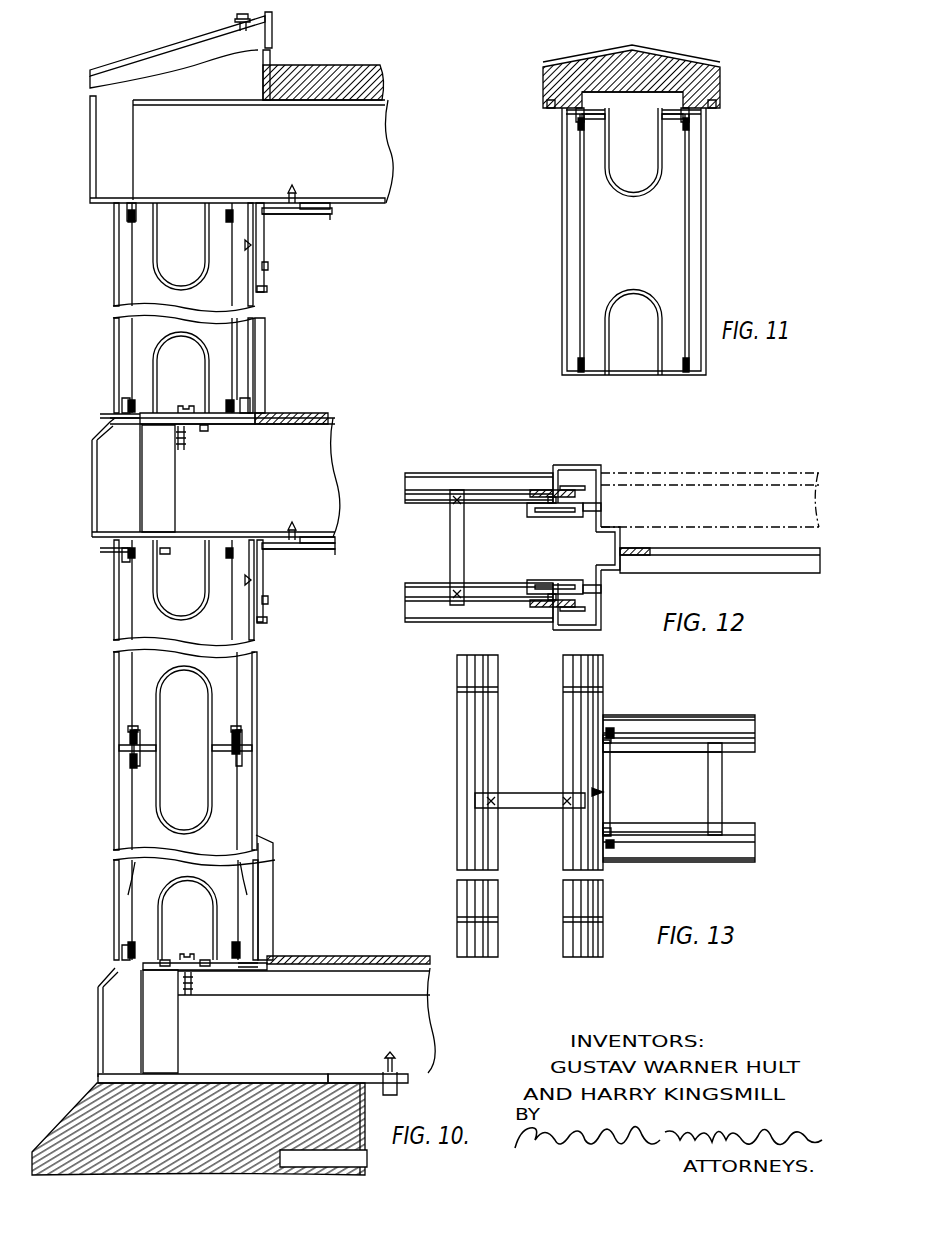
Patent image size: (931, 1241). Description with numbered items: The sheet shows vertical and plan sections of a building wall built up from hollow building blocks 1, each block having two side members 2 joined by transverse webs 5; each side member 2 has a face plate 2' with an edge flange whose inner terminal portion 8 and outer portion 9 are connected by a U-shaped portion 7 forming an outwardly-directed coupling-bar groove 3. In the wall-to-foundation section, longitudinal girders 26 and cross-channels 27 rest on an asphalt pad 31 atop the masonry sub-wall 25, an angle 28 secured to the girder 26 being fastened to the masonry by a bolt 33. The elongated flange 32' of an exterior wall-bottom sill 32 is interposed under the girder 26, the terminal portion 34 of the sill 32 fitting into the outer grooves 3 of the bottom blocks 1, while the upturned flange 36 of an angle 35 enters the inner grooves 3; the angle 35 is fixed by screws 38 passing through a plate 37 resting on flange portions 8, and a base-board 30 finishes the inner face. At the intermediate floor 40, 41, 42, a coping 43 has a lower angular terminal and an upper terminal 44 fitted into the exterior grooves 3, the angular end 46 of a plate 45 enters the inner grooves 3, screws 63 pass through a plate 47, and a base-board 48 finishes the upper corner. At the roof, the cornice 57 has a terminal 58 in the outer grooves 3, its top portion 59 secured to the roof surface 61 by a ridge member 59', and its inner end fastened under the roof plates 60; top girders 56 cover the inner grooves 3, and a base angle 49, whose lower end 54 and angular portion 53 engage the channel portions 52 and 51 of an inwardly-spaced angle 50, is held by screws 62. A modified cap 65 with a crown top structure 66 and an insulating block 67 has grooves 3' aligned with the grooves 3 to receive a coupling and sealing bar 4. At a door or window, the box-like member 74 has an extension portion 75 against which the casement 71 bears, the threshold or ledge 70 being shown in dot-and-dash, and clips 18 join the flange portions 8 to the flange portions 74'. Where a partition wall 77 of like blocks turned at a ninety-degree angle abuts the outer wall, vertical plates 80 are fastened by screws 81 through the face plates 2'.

In FIG. 10, the hollow building block 1 is at (114, 318).
In FIG. 11, the hollow building block 1 is at (560, 260).
In FIG. 12, the hollow building block 1 is at (460, 473).
In FIG. 13, the hollow building block 1 is at (540, 675).
In FIG. 10, the side member 2 is at (184, 862).
In FIG. 10, the face plate 2' is at (271, 581).
In FIG. 13, the face plate 2' is at (618, 806).
In FIG. 10, the coupling-bar groove 3 is at (161, 584).
In FIG. 11, the coupling-bar groove 3 is at (637, 266).
In FIG. 12, the coupling-bar groove 3 is at (537, 550).
In FIG. 13, the coupling-bar groove 3 is at (636, 771).
In FIG. 11, the cap groove 3' is at (635, 90).
In FIG. 10, the coupling and sealing bar 4 is at (128, 765).
In FIG. 11, the coupling and sealing bar 4 is at (576, 118).
In FIG. 12, the coupling and sealing bar 4 is at (551, 494).
In FIG. 10, the web 5 is at (200, 332).
In FIG. 11, the web 5 is at (633, 241).
In FIG. 12, the web 5 is at (450, 550).
In FIG. 13, the web 5 is at (520, 810).
In FIG. 10, the U-shaped portion 7 is at (134, 405).
In FIG. 11, the U-shaped portion 7 is at (593, 125).
In FIG. 13, the U-shaped portion 7 is at (625, 754).
In FIG. 10, the inner terminal edge portion 8 is at (152, 412).
In FIG. 11, the inner terminal edge portion 8 is at (600, 118).
In FIG. 12, the inner terminal edge portion 8 is at (537, 512).
In FIG. 13, the inner terminal edge portion 8 is at (603, 740).
In FIG. 10, the outer flange portion 9 is at (110, 417).
In FIG. 11, the outer flange portion 9 is at (566, 115).
In FIG. 13, the outer flange portion 9 is at (618, 717).
In FIG. 12, the clip 18 is at (555, 517).
In FIG. 10, the masonry sub-wall 25 is at (72, 1108).
In FIG. 10, the longitudinal girder 26 is at (430, 1025).
In FIG. 10, the cross-channel 27 is at (178, 1043).
In FIG. 10, the angle 28 is at (383, 1085).
In FIG. 10, the base-board 30 is at (273, 872).
In FIG. 10, the asphalt pad 31 is at (98, 1079).
In FIG. 10, the exterior wall-bottom sill 32 is at (86, 1022).
In FIG. 10, the elongated flange 32' is at (336, 1063).
In FIG. 10, the bolt 33 is at (370, 1160).
In FIG. 10, the terminal portion 34 is at (122, 950).
In FIG. 10, the angle 35 is at (222, 970).
In FIG. 10, the upwardly-directed flange 36 is at (262, 970).
In FIG. 10, the plate 37 is at (187, 952).
In FIG. 10, the screw 38 is at (189, 995).
In FIG. 10, the intermediate floor girder 40 is at (333, 462).
In FIG. 10, the floor 41 is at (300, 413).
In FIG. 10, the intermediate floor member 42 is at (175, 496).
In FIG. 10, the coping 43 is at (92, 488).
In FIG. 10, the coping terminal 44 is at (122, 408).
In FIG. 10, the plate 45 is at (205, 426).
In FIG. 10, the angular end 46 is at (250, 400).
In FIG. 10, the plate 47 is at (237, 400).
In FIG. 10, the base-board 48 is at (266, 358).
In FIG. 10, the base angle 49 is at (262, 203).
In FIG. 10, the inwardly-spaced angle 50 is at (315, 216).
In FIG. 10, the upper channel portion 51 is at (330, 205).
In FIG. 10, the lower channel portion 52 is at (268, 289).
In FIG. 10, the angular portion 53 is at (330, 220).
In FIG. 10, the lower end 54 is at (268, 265).
In FIG. 10, the top girder 56 is at (385, 143).
In FIG. 10, the cornice 57 is at (90, 141).
In FIG. 10, the cornice terminal 58 is at (126, 214).
In FIG. 10, the cornice top portion 59 is at (177, 52).
In FIG. 10, the angular ridge member 59' is at (271, 30).
In FIG. 10, the roof plate 60 is at (385, 80).
In FIG. 10, the roof surface 61 is at (343, 65).
In FIG. 10, the screw 62 is at (293, 190).
In FIG. 10, the screw 63 is at (178, 440).
In FIG. 11, the cap 65 is at (600, 52).
In FIG. 11, the crown top structure 66 is at (677, 58).
In FIG. 11, the insulating block 67 is at (648, 76).
In FIG. 12, the threshold or ledge 70 is at (705, 473).
In FIG. 12, the window casement 71 is at (705, 550).
In FIG. 12, the box-like member 74 is at (577, 532).
In FIG. 12, the flange portion 74' is at (615, 549).
In FIG. 12, the extension portion 75 is at (622, 540).
In FIG. 13, the partition wall 77 is at (732, 715).
In FIG. 13, the vertical plate 80 is at (612, 800).
In FIG. 13, the screw 81 is at (612, 788).